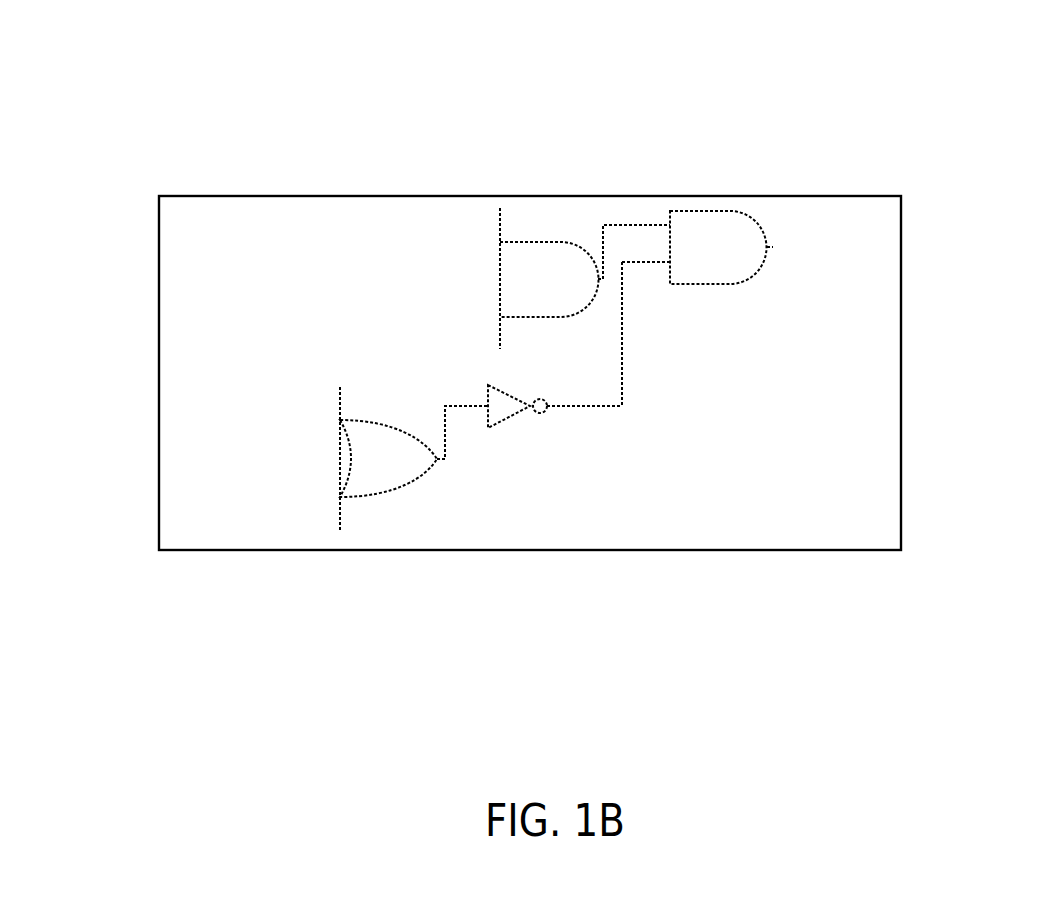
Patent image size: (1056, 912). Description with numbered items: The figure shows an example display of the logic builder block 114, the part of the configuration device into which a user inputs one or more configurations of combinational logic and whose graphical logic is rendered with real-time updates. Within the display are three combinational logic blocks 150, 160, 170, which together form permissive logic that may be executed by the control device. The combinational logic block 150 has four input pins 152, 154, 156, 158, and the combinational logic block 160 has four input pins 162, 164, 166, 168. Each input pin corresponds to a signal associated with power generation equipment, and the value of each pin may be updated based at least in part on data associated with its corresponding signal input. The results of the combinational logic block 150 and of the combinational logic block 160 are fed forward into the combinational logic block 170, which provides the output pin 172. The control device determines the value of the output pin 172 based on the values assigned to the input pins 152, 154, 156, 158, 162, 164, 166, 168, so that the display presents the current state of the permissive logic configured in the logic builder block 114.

The logic builder block 114 is at (956, 55).
The combinational logic block 150 is at (549, 278).
The input pin 152 is at (451, 226).
The input pin 154 is at (451, 264).
The input pin 156 is at (451, 302).
The input pin 158 is at (451, 340).
The combinational logic block 160 is at (388, 459).
The input pin 162 is at (240, 403).
The input pin 164 is at (240, 441).
The input pin 166 is at (240, 479).
The input pin 168 is at (240, 517).
The combinational logic block 170 is at (718, 247).
The output pin 172 is at (818, 250).